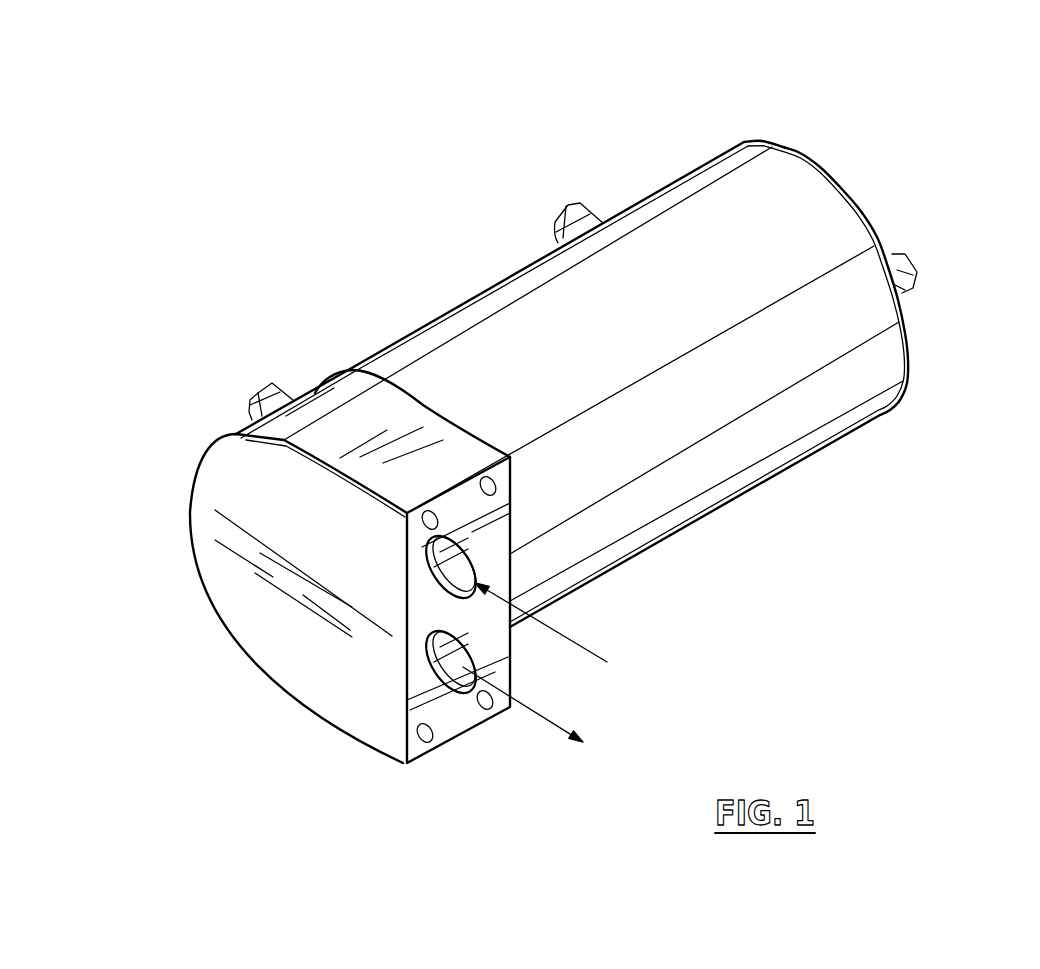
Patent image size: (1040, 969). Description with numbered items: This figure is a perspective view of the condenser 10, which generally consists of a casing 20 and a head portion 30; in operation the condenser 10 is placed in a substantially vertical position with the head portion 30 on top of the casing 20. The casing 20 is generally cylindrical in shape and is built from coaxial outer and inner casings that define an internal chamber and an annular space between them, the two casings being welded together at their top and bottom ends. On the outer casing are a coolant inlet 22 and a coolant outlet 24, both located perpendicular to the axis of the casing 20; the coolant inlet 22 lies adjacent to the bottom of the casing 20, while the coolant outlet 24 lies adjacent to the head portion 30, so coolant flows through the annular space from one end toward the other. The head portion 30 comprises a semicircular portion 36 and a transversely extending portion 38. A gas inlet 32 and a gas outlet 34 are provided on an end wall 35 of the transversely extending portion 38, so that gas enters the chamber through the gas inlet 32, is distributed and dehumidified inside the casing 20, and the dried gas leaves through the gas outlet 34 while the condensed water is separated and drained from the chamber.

The condenser 10 is at (322, 132).
The casing 20 is at (868, 326).
The coolant inlet 22 is at (569, 218).
The coolant outlet 24 is at (260, 393).
The head portion 30 is at (277, 643).
The gas inlet 32 is at (588, 652).
The gas outlet 34 is at (556, 714).
The end wall 35 is at (455, 716).
The semicircular portion 36 is at (318, 404).
The transversely extending portion 38 is at (433, 432).